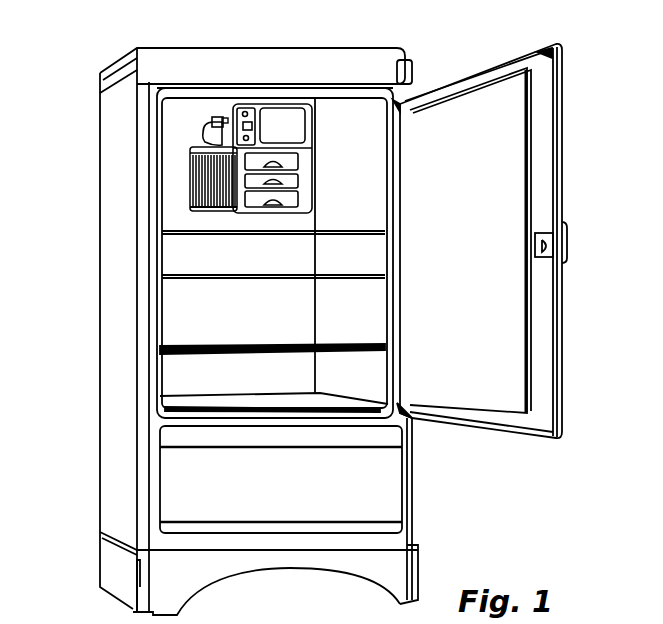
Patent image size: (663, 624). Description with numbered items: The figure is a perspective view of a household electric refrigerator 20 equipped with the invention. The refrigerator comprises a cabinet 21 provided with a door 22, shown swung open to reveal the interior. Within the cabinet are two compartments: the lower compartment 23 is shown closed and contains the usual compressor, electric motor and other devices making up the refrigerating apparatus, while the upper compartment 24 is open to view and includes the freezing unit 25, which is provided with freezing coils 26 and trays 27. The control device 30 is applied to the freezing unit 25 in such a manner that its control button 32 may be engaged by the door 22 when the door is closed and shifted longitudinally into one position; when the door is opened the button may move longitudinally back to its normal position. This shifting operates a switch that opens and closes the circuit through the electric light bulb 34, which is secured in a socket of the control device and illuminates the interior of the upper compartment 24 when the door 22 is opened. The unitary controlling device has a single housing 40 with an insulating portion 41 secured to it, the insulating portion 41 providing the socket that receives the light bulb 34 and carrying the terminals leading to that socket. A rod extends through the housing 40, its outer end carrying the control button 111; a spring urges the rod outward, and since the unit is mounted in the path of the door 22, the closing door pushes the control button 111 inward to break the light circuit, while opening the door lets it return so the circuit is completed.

The electric refrigerator 20 is at (69, 134).
The cabinet 21 is at (118, 331).
The door 22 is at (548, 343).
The lower compartment 23 is at (278, 510).
The upper compartment 24 is at (166, 207).
The freezing unit 25 is at (238, 160).
The freezing coils 26 is at (212, 208).
The trays 27 is at (292, 200).
The control device 30 is at (248, 115).
The control button 32 is at (249, 127).
The electric light bulb 34 is at (203, 137).
The housing 40 is at (225, 117).
The insulating portion 41 is at (215, 118).
The control button 111 is at (250, 130).